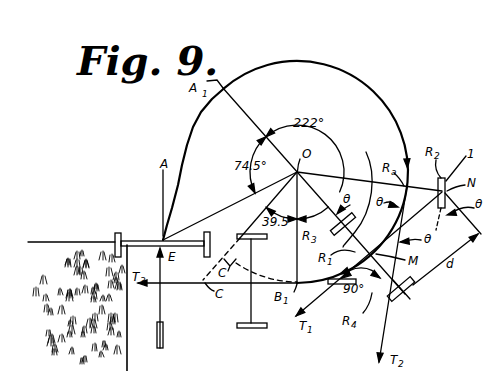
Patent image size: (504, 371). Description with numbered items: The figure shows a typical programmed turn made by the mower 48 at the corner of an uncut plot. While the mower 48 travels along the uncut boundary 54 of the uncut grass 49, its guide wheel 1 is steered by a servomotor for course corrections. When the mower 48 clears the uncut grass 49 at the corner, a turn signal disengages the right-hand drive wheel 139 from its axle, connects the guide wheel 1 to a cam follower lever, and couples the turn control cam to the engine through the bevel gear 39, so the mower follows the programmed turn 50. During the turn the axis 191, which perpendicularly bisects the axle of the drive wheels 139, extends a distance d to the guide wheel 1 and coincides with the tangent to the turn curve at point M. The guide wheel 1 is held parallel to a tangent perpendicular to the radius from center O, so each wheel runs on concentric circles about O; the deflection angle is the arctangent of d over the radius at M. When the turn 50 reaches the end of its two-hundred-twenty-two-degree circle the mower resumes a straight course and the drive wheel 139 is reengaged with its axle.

The guide wheel 1 is at (456, 179).
The bevel gear 39 is at (416, 285).
The mower 48 is at (133, 241).
The uncut grass 49 is at (79, 307).
The programmed turn 50 is at (193, 126).
The uncut boundary 54 is at (51, 241).
The drive wheel 139 is at (117, 232).
The axis 191 is at (161, 302).